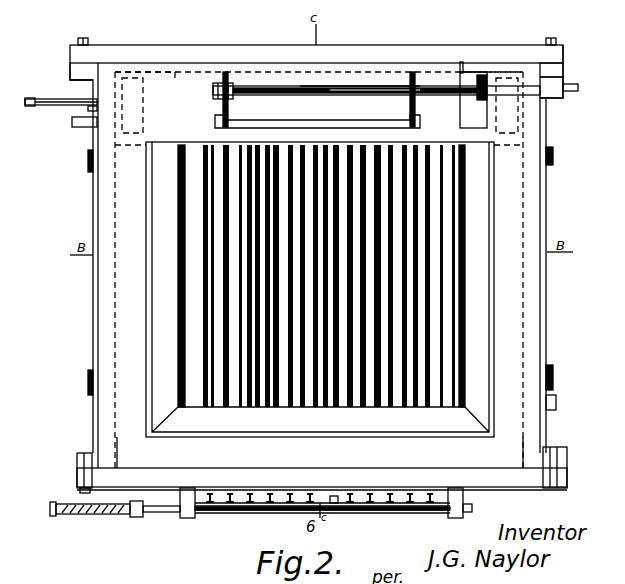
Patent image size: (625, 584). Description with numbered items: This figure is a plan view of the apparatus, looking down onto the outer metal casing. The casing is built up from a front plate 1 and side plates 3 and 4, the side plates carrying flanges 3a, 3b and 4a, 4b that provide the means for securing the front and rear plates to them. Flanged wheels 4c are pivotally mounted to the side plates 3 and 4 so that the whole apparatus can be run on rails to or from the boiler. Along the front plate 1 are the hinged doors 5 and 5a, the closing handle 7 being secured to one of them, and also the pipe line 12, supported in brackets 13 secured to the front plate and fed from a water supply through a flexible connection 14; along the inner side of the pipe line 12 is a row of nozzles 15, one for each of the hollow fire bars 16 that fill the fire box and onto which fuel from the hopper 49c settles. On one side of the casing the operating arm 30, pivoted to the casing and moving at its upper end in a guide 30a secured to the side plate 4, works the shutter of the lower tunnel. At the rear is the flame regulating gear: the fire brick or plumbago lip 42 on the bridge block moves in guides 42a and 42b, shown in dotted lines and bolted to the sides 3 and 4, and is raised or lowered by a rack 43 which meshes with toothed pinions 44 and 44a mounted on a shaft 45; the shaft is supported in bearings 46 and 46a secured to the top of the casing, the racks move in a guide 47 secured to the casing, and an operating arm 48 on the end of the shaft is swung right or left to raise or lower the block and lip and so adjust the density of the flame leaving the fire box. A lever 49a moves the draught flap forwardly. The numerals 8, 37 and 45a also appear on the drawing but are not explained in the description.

The front plate 1 is at (135, 480).
The side plate 3 is at (533, 225).
The flange 3a is at (557, 69).
The flange 3b is at (567, 453).
The side plate 4 is at (98, 214).
The flange 4a is at (80, 70).
The flange 4b is at (77, 456).
The flanged wheels 4c is at (572, 372).
The door 5 is at (278, 490).
The door 5a is at (400, 492).
The closing handle 7 is at (338, 512).
The top cover plate 8 is at (442, 47).
The pipe line 12 is at (240, 508).
The brackets 13 is at (190, 518).
The flexible connection 14 is at (83, 502).
The nozzles 15 is at (217, 493).
The fire bars 16 is at (203, 333).
The operating arm 30 is at (33, 105).
The guide 30a is at (60, 106).
The end plates 37 is at (178, 266).
The lip 42 is at (319, 270).
The guide 42a is at (145, 70).
The guide 42b is at (510, 137).
The rack 43 is at (230, 112).
The toothed pinion 44 is at (233, 81).
The toothed pinion 44a is at (332, 86).
The shaft 45 is at (322, 91).
The hanger 45a is at (409, 103).
The bearing 46 is at (212, 95).
The bearing 46a is at (465, 100).
The guide 47 is at (215, 128).
The operating arm 48 is at (565, 88).
The lever 49a is at (558, 403).
The hopper 49c is at (475, 330).